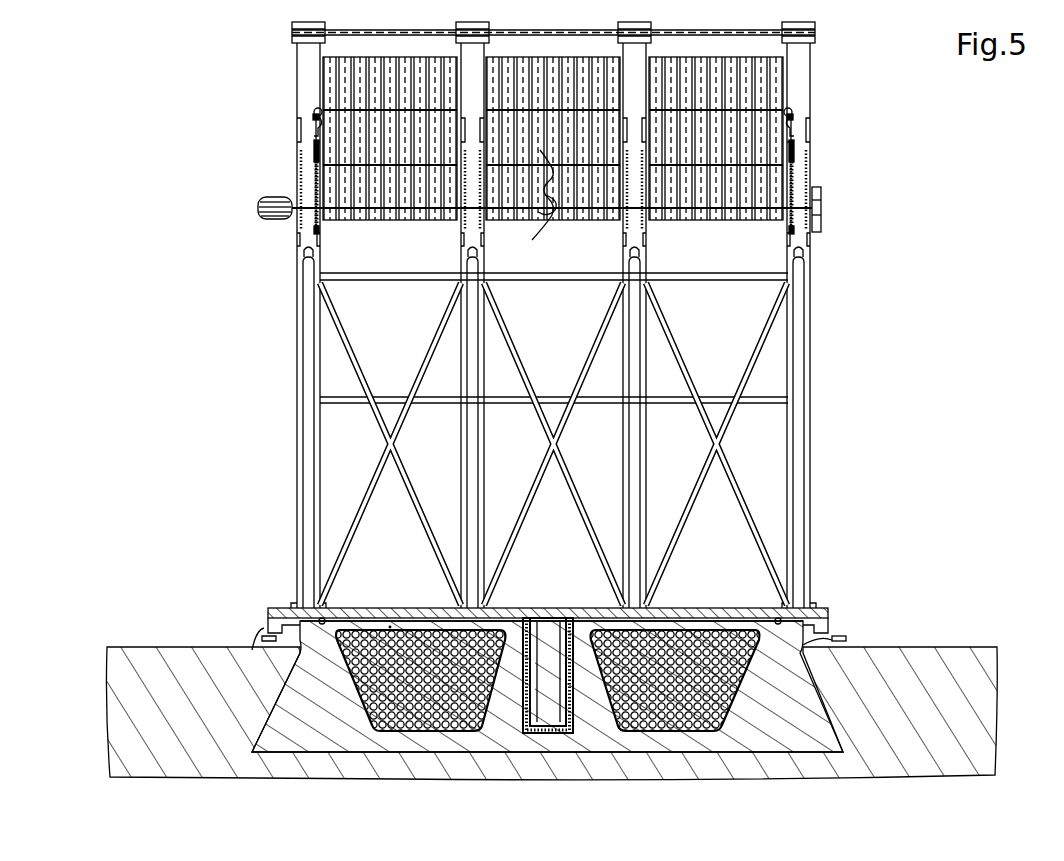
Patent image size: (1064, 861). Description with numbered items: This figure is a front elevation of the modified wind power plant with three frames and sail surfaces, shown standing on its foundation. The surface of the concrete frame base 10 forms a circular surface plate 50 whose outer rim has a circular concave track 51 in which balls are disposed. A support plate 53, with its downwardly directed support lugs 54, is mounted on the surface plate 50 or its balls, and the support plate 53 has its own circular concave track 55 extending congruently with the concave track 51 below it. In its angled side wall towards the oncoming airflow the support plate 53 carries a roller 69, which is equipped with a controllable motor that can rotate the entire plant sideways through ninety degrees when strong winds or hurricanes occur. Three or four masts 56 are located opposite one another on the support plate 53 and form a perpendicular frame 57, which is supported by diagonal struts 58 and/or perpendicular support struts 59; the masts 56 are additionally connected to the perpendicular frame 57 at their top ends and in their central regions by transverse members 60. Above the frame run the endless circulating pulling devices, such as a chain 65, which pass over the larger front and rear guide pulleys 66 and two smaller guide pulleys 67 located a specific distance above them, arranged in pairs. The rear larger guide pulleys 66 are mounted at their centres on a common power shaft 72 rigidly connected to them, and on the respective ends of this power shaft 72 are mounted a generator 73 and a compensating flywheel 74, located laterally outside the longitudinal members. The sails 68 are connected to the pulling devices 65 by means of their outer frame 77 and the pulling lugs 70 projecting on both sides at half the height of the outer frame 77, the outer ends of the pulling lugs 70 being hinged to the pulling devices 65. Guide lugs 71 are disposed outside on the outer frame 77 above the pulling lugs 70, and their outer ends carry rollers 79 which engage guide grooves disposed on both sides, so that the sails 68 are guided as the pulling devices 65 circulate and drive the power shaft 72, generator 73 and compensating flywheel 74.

The concrete frame base 10 is at (215, 680).
The surface plate 50 is at (388, 626).
The circular concave track 51 is at (300, 705).
The support plate 53 is at (680, 612).
The support lugs 54 is at (840, 633).
The circular concave track 55 is at (332, 590).
The masts 56 is at (466, 335).
The perpendicular frame 57 is at (282, 457).
The diagonal struts 58 is at (328, 318).
The perpendicular support struts 59 is at (797, 383).
The transverse members 60 is at (765, 283).
The chain 65 is at (314, 150).
The larger guide pulleys 66 is at (315, 222).
The smaller guide pulleys 67 is at (315, 166).
The sails 68 is at (397, 143).
The roller 69 is at (256, 632).
The pulling lugs 70 is at (316, 128).
The guide lugs 71 is at (314, 110).
The power shaft 72 is at (538, 225).
The generator 73 is at (263, 214).
The compensating flywheel 74 is at (820, 198).
The outer frame 77 is at (365, 47).
The rollers 79 is at (313, 117).